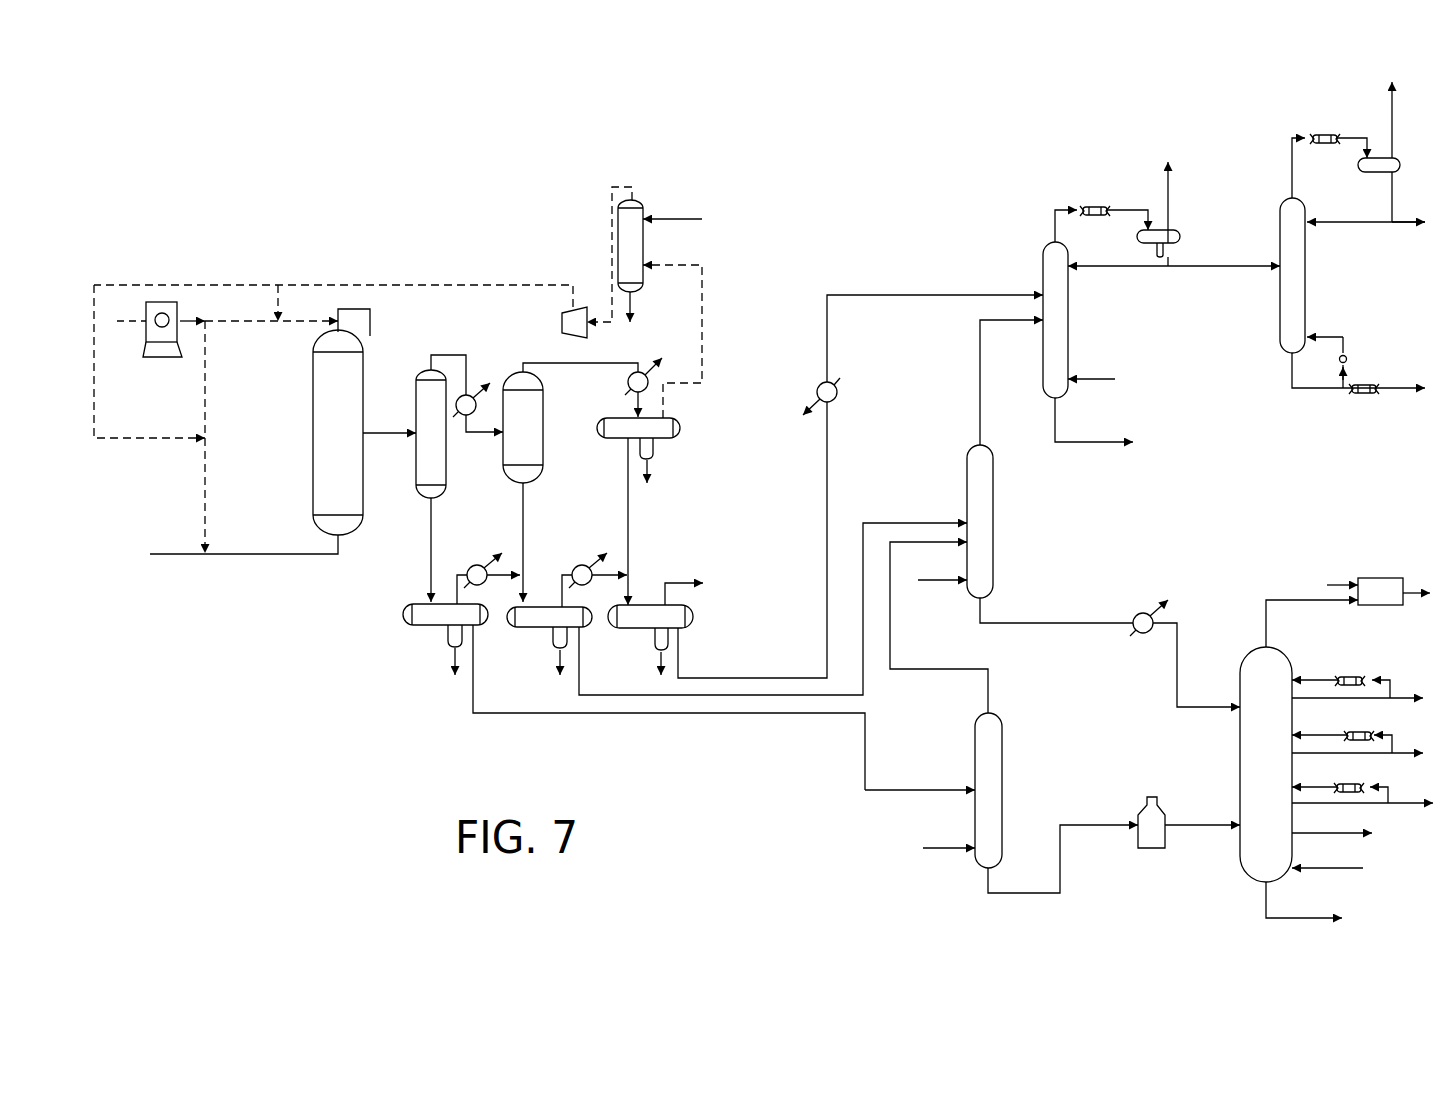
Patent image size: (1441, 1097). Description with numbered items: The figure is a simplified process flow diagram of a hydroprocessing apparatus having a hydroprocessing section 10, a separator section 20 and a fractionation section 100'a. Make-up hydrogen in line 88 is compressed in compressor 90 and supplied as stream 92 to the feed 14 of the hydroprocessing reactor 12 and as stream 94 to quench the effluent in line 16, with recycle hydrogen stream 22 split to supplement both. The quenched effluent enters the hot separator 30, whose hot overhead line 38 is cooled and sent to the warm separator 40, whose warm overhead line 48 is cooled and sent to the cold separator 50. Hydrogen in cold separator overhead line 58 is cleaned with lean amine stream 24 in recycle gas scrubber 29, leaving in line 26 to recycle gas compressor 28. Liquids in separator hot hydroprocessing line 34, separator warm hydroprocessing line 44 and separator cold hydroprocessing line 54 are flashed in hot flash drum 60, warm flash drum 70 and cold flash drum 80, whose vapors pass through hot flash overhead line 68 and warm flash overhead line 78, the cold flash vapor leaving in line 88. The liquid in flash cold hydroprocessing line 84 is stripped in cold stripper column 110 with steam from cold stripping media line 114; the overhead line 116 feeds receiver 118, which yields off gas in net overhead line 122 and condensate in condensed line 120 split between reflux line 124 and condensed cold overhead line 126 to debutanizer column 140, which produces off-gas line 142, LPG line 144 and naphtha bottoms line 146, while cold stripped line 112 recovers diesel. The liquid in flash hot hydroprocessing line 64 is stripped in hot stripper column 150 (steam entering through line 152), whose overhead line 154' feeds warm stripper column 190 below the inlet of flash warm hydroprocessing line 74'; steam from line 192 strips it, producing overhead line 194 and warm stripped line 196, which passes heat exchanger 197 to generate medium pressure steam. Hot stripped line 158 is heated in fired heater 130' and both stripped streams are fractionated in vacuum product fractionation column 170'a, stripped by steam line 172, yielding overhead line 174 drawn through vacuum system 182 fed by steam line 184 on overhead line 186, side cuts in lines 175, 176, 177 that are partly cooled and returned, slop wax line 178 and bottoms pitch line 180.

The hydroprocessing section 10 is at (303, 210).
The hydroprocessing reactor 12 is at (327, 465).
The feed 14 is at (170, 553).
The hydroprocessing effluent line 16 is at (372, 327).
The separator section 20 is at (750, 455).
The recycle hydrogen stream 22 is at (366, 282).
The lean amine stream 24 is at (690, 203).
The top stream line 26 is at (612, 198).
The recycle gas compressor 28 is at (562, 322).
The recycle gas scrubber 29 is at (643, 200).
The hot separator 30 is at (437, 498).
The separator hot hydroprocessing line 34 is at (428, 540).
The hot overhead line 38 is at (465, 363).
The warm separator 40 is at (543, 452).
The separator warm hydroprocessing line 44 is at (524, 488).
The warm overhead line 48 is at (573, 365).
The cold separator 50 is at (615, 440).
The separator cold hydroprocessing line 54 is at (630, 515).
The cold separator overhead line 58 is at (702, 332).
The hot flash drum 60 is at (433, 627).
The flash hot hydroprocessing line 64 is at (502, 700).
The hot flash overhead line 68 is at (458, 570).
The warm flash drum 70 is at (542, 605).
The flash warm hydroprocessing line 74' is at (773, 609).
The warm flash overhead line 78 is at (568, 570).
The cold flash drum 80 is at (652, 605).
The flash cold hydroprocessing line 84 is at (723, 678).
The make-up hydrogen line / cold flash overhead line 88 is at (137, 323).
The compressor 90 is at (172, 357).
The hydrogen stream 92 is at (205, 418).
The hydrogen stream 94 is at (230, 322).
The fractionation section 100'a is at (972, 116).
The cold stripper column 110 is at (1068, 313).
The cold stripped line 112 is at (1085, 440).
The cold stripping media line 114 is at (1097, 378).
The overhead line 116 is at (1055, 214).
The receiver 118 is at (1177, 230).
The condensed line 120 is at (1173, 257).
The net overhead line 122 is at (1168, 193).
The reflux line 124 is at (1142, 267).
The condensed cold overhead line 126 is at (1198, 267).
The fired heater 130' is at (1189, 836).
The debutanizer column 140 is at (1307, 273).
The net off-gas line 142 is at (1392, 113).
The LPG line 144 is at (1403, 223).
The bottoms line 146 is at (1385, 383).
The hot stripper column 150 is at (1002, 752).
The stripping media line 152 is at (933, 848).
The overhead line 154' is at (939, 627).
The hot stripped line 158 is at (1062, 853).
The product fractionation column 170'a is at (1231, 764).
The stripping media line 172 is at (1343, 870).
The overhead line 174 is at (1408, 597).
The heavy diesel line 175 is at (1400, 687).
The LVGO line 176 is at (1400, 737).
The HVGO line 177 is at (1408, 800).
The slop wax line 178 is at (1330, 833).
The bottoms pitch line 180 is at (1265, 907).
The vacuum system 182 is at (1370, 605).
The steam line 184 is at (1337, 583).
The overhead line 186 is at (1265, 632).
The warm stripper column 190 is at (922, 522).
The warm stripping media line 192 is at (937, 583).
The overhead line 194 is at (980, 417).
The warm stripped line 196 is at (1053, 623).
The heat exchanger 197 is at (1145, 597).